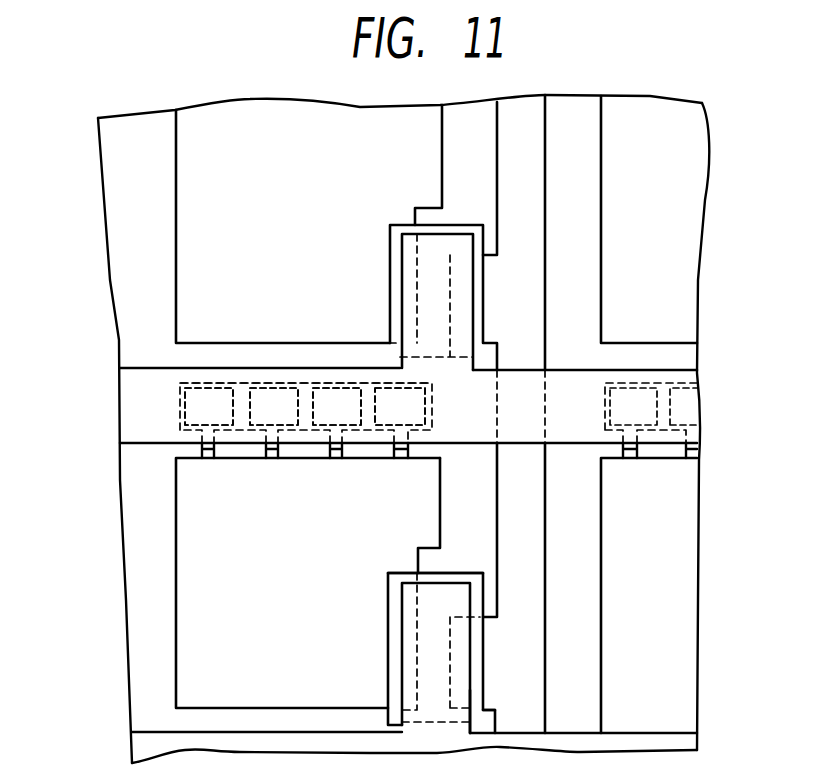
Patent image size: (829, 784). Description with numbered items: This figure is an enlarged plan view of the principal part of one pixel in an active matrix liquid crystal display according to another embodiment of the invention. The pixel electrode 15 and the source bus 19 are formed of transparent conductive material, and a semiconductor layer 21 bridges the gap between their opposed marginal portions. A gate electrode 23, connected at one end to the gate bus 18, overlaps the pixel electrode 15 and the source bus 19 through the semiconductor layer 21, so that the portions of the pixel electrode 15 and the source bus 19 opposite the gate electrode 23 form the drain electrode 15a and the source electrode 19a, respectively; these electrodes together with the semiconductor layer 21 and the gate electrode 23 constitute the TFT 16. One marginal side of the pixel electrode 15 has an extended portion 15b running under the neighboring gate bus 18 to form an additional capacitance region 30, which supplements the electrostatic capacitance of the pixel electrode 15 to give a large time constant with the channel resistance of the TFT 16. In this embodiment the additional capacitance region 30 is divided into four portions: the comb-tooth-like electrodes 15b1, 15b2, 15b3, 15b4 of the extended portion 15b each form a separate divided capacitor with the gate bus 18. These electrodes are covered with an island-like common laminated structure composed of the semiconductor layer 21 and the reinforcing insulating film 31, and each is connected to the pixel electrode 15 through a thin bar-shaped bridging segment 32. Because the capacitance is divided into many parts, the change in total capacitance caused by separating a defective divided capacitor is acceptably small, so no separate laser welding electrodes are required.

The pixel electrode 15 is at (183, 636).
The drain electrode 15a is at (402, 687).
The extended portion 15b is at (379, 175).
The comb-tooth-like electrode 15b1 is at (204, 393).
The comb-tooth-like electrode 15b2 is at (267, 397).
The comb-tooth-like electrode 15b3 is at (337, 400).
The comb-tooth-like electrode 15b4 is at (393, 397).
The TFT 16 is at (402, 558).
The gate bus 18 is at (697, 373).
The source bus 19 is at (527, 498).
The source electrode 19a is at (470, 641).
The semiconductor layer 21 is at (457, 577).
The gate electrode 23 is at (473, 693).
The additional capacitance region 30 is at (176, 412).
The reinforcing insulating film 31 is at (177, 397).
The bridging segment 32 is at (187, 451).